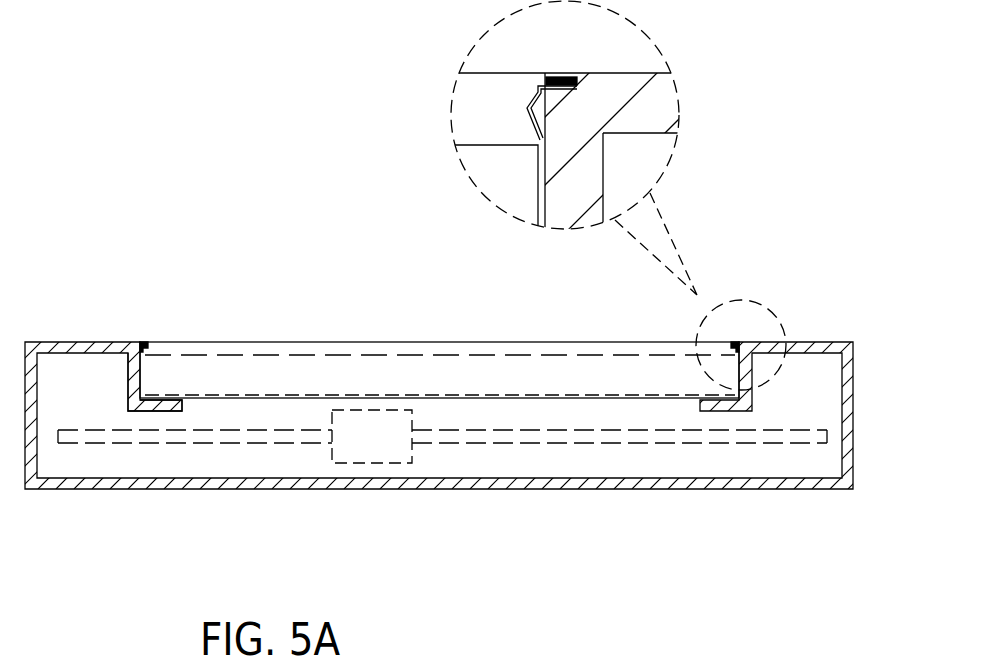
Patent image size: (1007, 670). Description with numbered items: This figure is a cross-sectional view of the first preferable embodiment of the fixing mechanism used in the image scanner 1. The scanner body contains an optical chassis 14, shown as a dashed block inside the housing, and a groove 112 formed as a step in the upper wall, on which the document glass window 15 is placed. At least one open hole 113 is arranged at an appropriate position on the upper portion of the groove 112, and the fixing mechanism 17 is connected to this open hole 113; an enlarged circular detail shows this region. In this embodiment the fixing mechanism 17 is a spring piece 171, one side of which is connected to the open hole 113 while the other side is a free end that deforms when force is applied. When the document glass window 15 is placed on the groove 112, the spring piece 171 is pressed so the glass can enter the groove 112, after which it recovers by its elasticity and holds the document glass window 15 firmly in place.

The image scanner 1 is at (40, 342).
The document glass window 15 is at (247, 385).
The fixing mechanism 17 is at (725, 342).
The groove 112 is at (218, 401).
The optical chassis 14 is at (407, 457).
The open hole 113 is at (565, 73).
The spring piece 171 is at (527, 108).